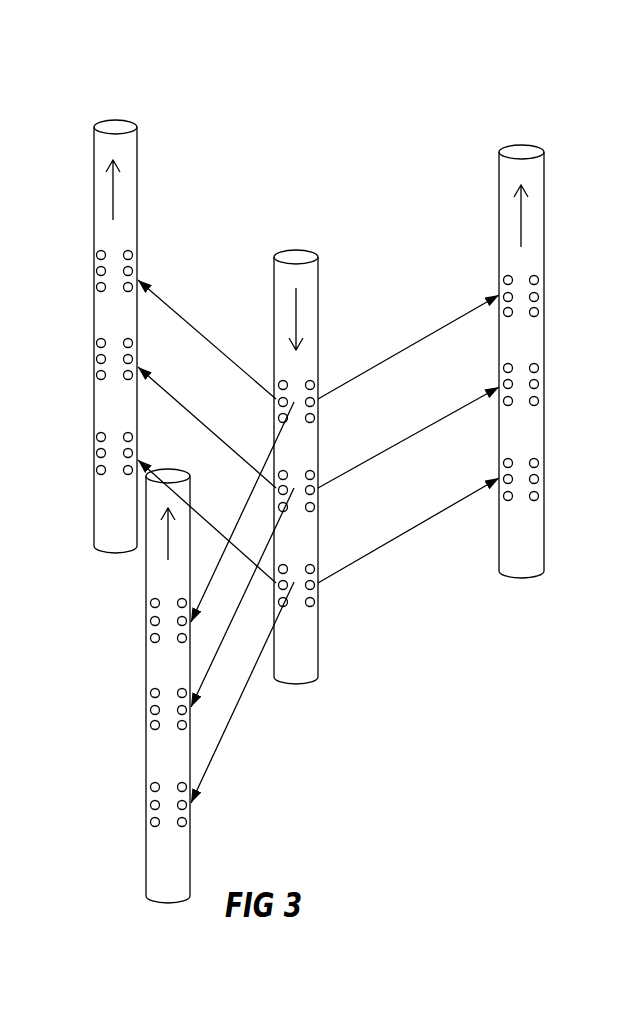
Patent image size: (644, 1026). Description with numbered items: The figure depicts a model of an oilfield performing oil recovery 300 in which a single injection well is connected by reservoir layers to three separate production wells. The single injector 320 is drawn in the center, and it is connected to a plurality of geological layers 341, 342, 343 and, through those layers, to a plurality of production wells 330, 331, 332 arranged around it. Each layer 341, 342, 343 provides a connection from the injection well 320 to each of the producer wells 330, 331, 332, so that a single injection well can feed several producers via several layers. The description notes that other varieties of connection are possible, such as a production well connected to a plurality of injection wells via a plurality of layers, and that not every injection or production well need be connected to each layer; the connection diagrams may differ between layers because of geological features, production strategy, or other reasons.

The oilfield performing oil recovery 300 is at (312, 143).
The injection well 320 is at (297, 262).
The production well 330 is at (117, 127).
The production well 331 is at (146, 888).
The production well 332 is at (522, 149).
The geological layer 341 is at (318, 451).
The geological layer 342 is at (318, 537).
The geological layer 343 is at (318, 631).